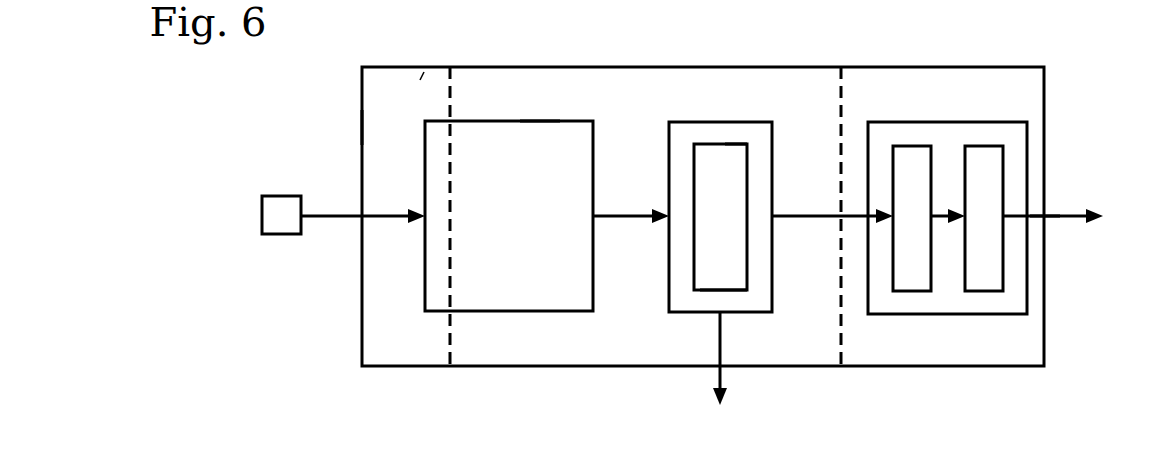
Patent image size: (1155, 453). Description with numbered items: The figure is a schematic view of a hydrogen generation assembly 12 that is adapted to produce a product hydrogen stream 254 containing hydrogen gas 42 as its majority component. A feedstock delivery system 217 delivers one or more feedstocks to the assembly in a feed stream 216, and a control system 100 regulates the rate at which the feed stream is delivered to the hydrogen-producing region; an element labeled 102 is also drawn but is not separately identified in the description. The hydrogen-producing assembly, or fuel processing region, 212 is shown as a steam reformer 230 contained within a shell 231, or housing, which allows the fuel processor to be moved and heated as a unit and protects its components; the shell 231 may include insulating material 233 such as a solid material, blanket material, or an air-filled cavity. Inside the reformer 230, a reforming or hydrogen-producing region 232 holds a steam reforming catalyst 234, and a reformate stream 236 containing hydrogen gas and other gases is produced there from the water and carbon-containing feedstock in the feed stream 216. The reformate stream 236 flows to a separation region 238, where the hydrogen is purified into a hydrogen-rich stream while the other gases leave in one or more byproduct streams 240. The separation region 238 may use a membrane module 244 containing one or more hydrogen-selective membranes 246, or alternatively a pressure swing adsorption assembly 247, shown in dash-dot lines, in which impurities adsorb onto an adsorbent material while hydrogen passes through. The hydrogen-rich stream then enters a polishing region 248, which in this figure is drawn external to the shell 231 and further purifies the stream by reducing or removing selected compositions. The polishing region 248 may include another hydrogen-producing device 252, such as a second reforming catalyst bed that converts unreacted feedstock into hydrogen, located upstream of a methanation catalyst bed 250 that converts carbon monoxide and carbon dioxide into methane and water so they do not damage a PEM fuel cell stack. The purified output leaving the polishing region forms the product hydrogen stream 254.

The hydrogen generation assembly 12 is at (306, 109).
The hydrogen gas 42 is at (1057, 216).
The control system 100 is at (275, 235).
The conduit 102 is at (828, 0).
The hydrogen-producing assembly 212 is at (333, 73).
The feed stream 216 is at (340, 216).
The feedstock delivery system 217 is at (256, 201).
The steam reformer 230 is at (389, 67).
The shell 231 is at (362, 127).
The reforming region 232 is at (465, 119).
The insulating material 233 is at (416, 87).
The steam reforming catalyst 234 is at (541, 120).
The reformate stream 236 is at (617, 216).
The separation region 238 is at (697, 121).
The byproduct streams 240 is at (722, 380).
The membrane module 244 is at (708, 143).
The hydrogen-selective membrane 246 is at (740, 145).
The pressure swing adsorption assembly 247 is at (730, 290).
The polishing region 248 is at (790, 216).
The methanation catalyst bed 250 is at (983, 291).
The hydrogen-producing device 252 is at (910, 291).
The product hydrogen stream 254 is at (1068, 219).